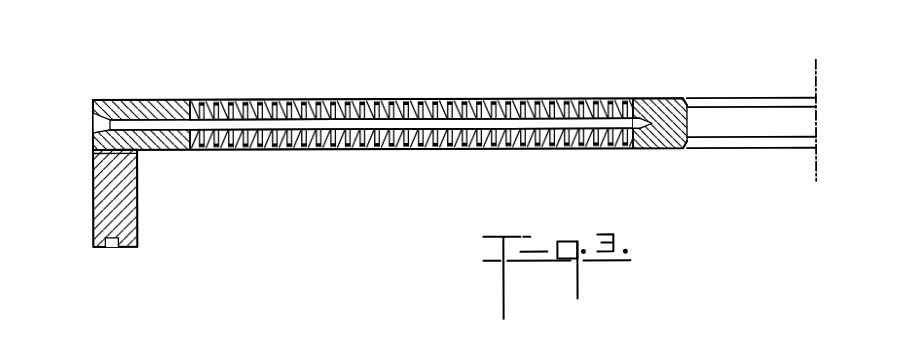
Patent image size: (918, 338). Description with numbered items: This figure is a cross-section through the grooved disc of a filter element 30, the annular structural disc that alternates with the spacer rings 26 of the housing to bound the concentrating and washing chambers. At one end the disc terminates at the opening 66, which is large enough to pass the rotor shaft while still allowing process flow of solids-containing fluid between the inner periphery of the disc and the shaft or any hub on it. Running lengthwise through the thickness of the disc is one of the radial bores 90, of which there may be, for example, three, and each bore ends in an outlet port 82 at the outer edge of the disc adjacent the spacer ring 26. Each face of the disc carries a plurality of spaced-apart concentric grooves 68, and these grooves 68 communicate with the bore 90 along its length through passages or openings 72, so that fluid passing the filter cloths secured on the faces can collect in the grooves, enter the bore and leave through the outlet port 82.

The spacer ring 26 is at (102, 200).
The filter element 30 is at (538, 88).
The opening 66 is at (735, 117).
The concentric grooves 68 is at (242, 100).
The passages 72 is at (307, 97).
The outlet port 82 is at (100, 118).
The radial bore 90 is at (172, 125).